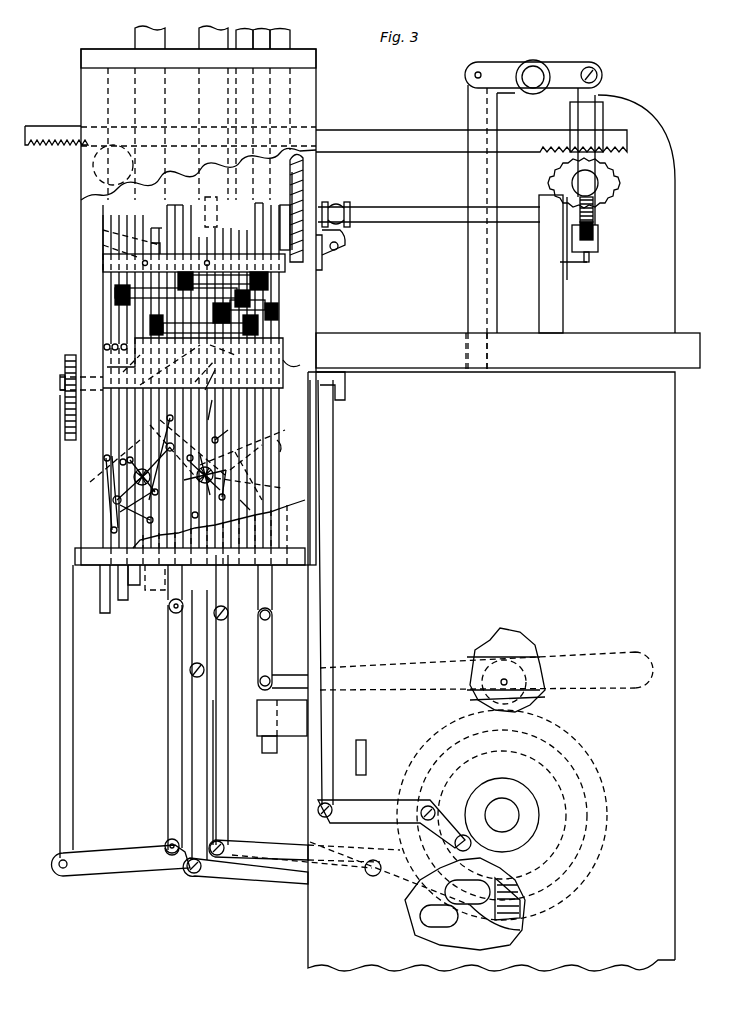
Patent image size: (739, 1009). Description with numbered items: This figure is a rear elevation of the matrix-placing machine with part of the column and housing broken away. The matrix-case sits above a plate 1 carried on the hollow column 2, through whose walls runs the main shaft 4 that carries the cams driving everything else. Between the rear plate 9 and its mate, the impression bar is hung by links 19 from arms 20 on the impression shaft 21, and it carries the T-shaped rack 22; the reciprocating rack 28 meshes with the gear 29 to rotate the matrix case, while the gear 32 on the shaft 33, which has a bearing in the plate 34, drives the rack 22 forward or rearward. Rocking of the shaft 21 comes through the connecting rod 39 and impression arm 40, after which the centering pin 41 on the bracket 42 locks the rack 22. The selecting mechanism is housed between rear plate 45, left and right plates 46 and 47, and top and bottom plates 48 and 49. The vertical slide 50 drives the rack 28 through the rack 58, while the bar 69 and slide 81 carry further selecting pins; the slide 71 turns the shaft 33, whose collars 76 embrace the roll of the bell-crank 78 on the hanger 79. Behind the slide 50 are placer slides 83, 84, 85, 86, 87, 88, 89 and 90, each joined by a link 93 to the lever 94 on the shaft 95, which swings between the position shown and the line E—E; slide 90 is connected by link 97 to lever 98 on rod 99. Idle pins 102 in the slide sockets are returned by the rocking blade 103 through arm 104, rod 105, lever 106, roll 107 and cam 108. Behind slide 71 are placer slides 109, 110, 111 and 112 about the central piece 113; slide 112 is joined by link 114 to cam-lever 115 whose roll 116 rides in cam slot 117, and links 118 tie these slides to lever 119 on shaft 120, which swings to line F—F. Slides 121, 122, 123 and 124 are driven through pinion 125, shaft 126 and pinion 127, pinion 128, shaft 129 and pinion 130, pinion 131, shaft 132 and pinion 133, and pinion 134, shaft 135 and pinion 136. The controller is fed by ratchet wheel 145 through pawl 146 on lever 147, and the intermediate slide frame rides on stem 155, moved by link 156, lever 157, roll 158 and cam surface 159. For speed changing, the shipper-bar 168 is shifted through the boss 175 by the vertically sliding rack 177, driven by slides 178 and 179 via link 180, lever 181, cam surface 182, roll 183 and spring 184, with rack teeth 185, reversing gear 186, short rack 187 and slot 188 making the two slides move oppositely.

The plate 1 is at (508, 352).
The column 2 is at (491, 671).
The shaft 4 is at (502, 815).
The rear plate 9 is at (636, 214).
The links 19 is at (596, 100).
The arms 20 is at (575, 74).
The shaft 21 is at (533, 77).
The T-shaped rack 22 is at (598, 240).
The reciprocating rack 28 is at (471, 127).
The gear 29 is at (615, 175).
The gear 32 is at (600, 214).
The shaft 33 is at (429, 213).
The plate 34 is at (551, 264).
The connecting rod 39 is at (468, 108).
The impression arm 40 is at (492, 75).
The centering pin 41 is at (590, 254).
The bracket 42 is at (572, 265).
The rear plate 45 is at (198, 307).
The left plate 46 is at (204, 361).
The right plate 47 is at (191, 524).
The top plate 48 is at (198, 58).
The bottom plate 49 is at (190, 557).
The vertical slide 50 is at (150, 37).
The rack 58 is at (42, 126).
The vertically sliding bar 69 is at (246, 30).
The slide 71 is at (213, 37).
The collars 76 is at (352, 205).
The bell-crank 78 is at (346, 236).
The hanger 79 is at (340, 250).
The vertical slide 81 is at (262, 31).
The placer slide 83 is at (126, 590).
The placer slide 84 is at (135, 585).
The placer slide 85 is at (130, 610).
The placer slide 86 is at (104, 605).
The placer slide 87 is at (152, 243).
The placer slide 88 is at (160, 228).
The placer slide 89 is at (172, 220).
The placer slide 90 is at (184, 192).
The link 93 is at (118, 484).
The lever 94 is at (110, 470).
The shaft 95 is at (110, 455).
The link 97 is at (172, 652).
The horizontal lever 98 is at (170, 860).
The rod 99 is at (365, 868).
The idle pins 102 is at (105, 345).
The rocking blade 103 is at (299, 363).
The arm 104 is at (330, 378).
The rod 105 is at (334, 495).
The lever 106 is at (391, 824).
The roll 107 is at (475, 850).
The cam 108 is at (502, 815).
The placer slide 109 is at (180, 430).
The placer slide 110 is at (198, 440).
The placer slide 111 is at (214, 405).
The placer slide 112 is at (226, 600).
The central piece 113 is at (223, 380).
The link 114 is at (228, 800).
The cam-lever 115 is at (339, 872).
The roll 116 is at (470, 932).
The cam slot 117 is at (518, 892).
The links 118 is at (253, 440).
The lever 119 is at (270, 520).
The shaft 120 is at (261, 485).
The slide 121 is at (228, 432).
The slide 122 is at (240, 228).
The slide 123 is at (256, 456).
The slide 124 is at (258, 228).
The pinion 125 is at (285, 297).
The shaft 126 is at (103, 262).
The pinion 127 is at (115, 292).
The pinion 128 is at (285, 325).
The shaft 129 is at (170, 365).
The pinion 130 is at (138, 362).
The pinion 131 is at (285, 283).
The shaft 132 is at (103, 230).
The pinion 133 is at (103, 245).
The pinion 134 is at (285, 311).
The shaft 135 is at (223, 349).
The pinion 136 is at (199, 371).
The ratchet wheel 145 is at (65, 360).
The pawl 146 is at (60, 740).
The lever 147 is at (121, 860).
The vertically sliding stem 155 is at (205, 640).
The link 156 is at (172, 740).
The lever 157 is at (205, 872).
The roll 158 is at (430, 932).
The cam surface 159 is at (495, 924).
The shipper-bar 168 is at (362, 740).
The boss 175 is at (282, 718).
The vertically sliding rack 177 is at (284, 38).
The slide 178 is at (273, 585).
The slide 179 is at (295, 450).
The link 180 is at (273, 638).
The lever 181 is at (291, 682).
The cam surface 182 is at (470, 690).
The roll 183 is at (520, 698).
The spring 184 is at (515, 635).
The rack teeth 185 is at (322, 258).
The reversing gear 186 is at (305, 196).
The short rack 187 is at (305, 178).
The slot 188 is at (305, 160).
The line E— E is at (100, 440).
The line F— F is at (200, 465).